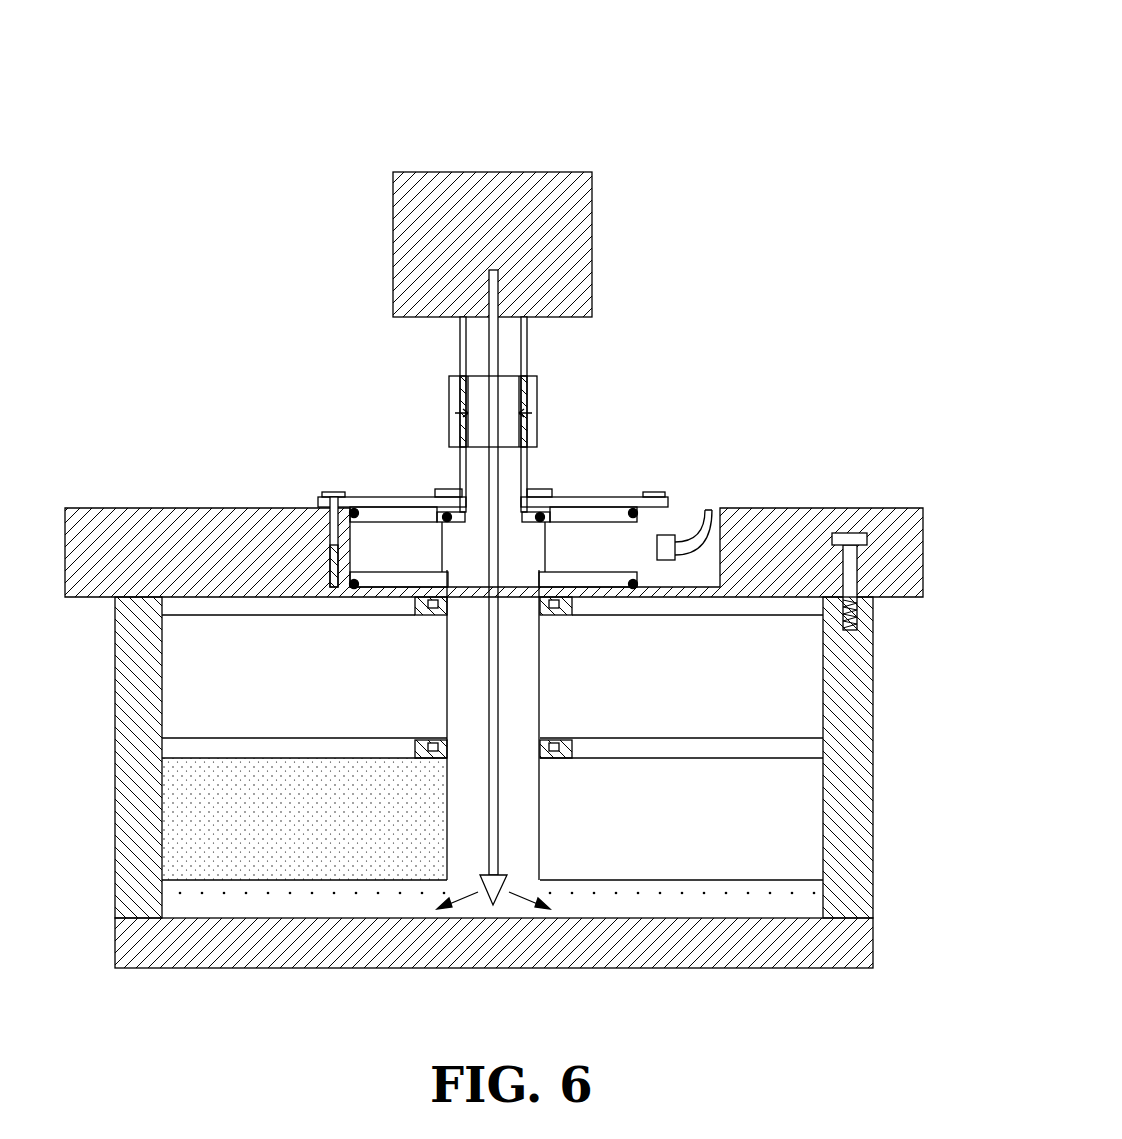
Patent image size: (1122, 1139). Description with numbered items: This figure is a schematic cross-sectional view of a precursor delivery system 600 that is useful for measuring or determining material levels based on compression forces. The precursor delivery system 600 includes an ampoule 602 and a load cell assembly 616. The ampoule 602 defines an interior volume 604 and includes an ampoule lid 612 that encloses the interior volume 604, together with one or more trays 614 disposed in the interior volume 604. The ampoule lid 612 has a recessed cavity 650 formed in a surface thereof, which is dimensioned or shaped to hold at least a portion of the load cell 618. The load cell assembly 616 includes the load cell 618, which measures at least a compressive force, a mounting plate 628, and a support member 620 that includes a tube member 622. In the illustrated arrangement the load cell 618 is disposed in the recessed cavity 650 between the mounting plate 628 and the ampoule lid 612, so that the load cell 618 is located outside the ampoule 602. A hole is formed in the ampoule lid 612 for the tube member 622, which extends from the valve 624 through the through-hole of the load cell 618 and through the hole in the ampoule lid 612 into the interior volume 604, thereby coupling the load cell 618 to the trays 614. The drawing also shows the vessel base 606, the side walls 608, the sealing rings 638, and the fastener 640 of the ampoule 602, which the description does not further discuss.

The precursor delivery system 600 is at (712, 48).
The ampoule 602 is at (172, 366).
The interior volume 604 is at (232, 917).
The bottom plate 606 is at (800, 950).
The container side walls 608 is at (128, 806).
The ampoule lid 612 is at (888, 537).
The trays 614 is at (322, 694).
The load cell assembly 616 is at (320, 430).
The load cell 618 is at (585, 538).
The support member 620 is at (453, 830).
The tube member 622 is at (530, 825).
The valve 624 is at (590, 230).
The mounting plate 628 is at (553, 492).
The O-ring seals 638 is at (358, 582).
The fastener bolt 640 is at (337, 560).
The recessed cavity 650 is at (700, 582).